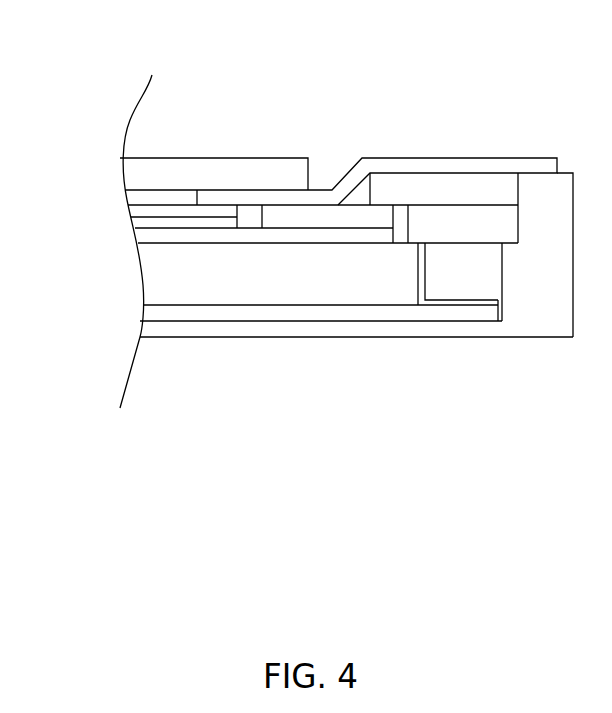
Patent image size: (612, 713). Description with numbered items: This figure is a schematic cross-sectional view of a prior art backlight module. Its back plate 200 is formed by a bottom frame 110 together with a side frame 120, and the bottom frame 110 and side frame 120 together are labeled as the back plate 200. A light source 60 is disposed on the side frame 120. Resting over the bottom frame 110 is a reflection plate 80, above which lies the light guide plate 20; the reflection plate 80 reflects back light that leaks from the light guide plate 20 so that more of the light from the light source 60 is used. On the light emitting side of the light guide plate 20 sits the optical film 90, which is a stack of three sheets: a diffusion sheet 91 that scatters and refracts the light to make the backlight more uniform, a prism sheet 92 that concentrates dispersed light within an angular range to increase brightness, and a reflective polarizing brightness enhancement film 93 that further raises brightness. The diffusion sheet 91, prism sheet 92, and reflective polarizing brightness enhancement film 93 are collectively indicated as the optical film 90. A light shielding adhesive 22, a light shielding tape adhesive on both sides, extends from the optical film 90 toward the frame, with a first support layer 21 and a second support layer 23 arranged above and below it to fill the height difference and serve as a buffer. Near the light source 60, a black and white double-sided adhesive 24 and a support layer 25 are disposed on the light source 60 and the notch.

The light guide plate 20 is at (160, 274).
The first support layer 21 is at (322, 218).
The light shielding adhesive 22 is at (390, 168).
The second support layer 23 is at (281, 178).
The black and white double-sided adhesive 24 is at (445, 220).
The support layer 25 is at (490, 198).
The light source 60 is at (463, 274).
The reflection plate 80 is at (165, 313).
The optical film 90 is at (258, 610).
The diffusion sheet 91 is at (128, 208).
The prism sheet 92 is at (135, 223).
The reflective polarizing brightness enhancement film 93 is at (140, 237).
The bottom frame 110 is at (183, 330).
The side frame 120 is at (553, 271).
The back plate 200 is at (435, 593).